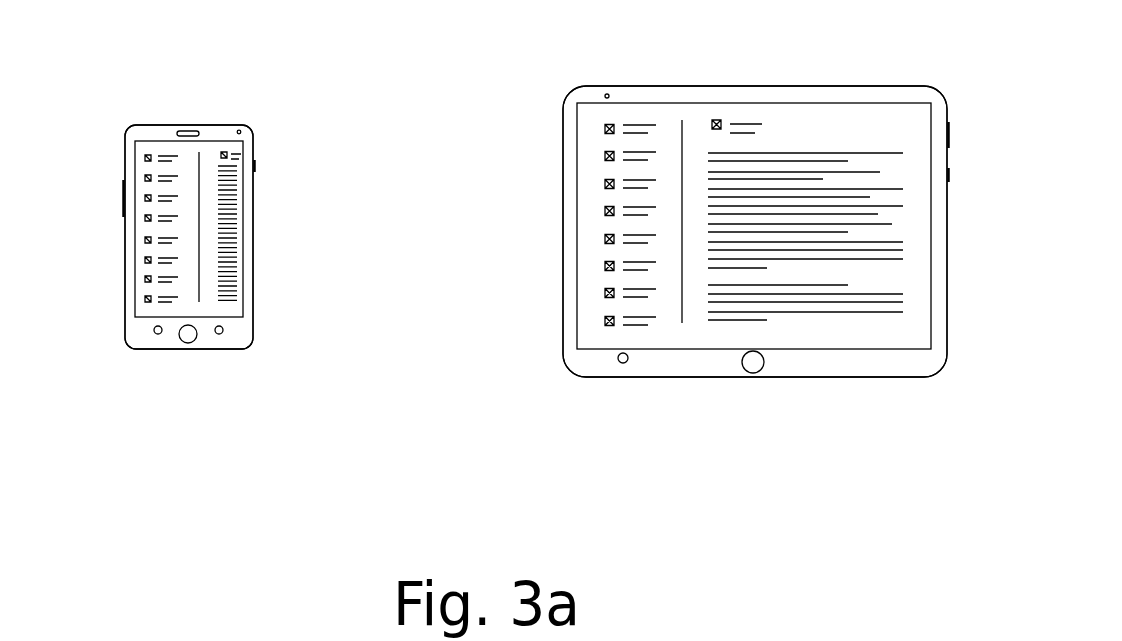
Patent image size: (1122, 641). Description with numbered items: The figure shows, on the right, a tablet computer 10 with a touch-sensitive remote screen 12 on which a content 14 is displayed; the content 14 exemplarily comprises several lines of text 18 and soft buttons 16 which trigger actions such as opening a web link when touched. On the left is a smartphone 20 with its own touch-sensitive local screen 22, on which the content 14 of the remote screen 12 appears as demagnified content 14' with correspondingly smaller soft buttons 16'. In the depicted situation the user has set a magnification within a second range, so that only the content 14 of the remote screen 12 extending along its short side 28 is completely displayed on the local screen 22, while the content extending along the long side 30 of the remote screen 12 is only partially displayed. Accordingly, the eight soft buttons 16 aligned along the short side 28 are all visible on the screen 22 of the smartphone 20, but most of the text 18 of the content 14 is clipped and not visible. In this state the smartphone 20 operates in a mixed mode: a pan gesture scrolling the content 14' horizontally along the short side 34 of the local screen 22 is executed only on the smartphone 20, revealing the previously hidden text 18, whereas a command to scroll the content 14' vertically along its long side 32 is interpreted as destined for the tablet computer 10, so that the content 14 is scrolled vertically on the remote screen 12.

The tablet computer 10 is at (720, 395).
The touch-sensitive screen 12 is at (845, 133).
The content 14 is at (805, 300).
The soft buttons 16 is at (577, 247).
The lines of text 18 is at (805, 313).
The short side 28 is at (562, 208).
The long side 30 is at (607, 378).
The smartphone 20 is at (182, 358).
The short side 34 is at (157, 125).
The long side 32 is at (126, 283).
The soft buttons 16' is at (99, 228).
The touch-sensitive screen 22 is at (207, 178).
The content 14' is at (279, 226).